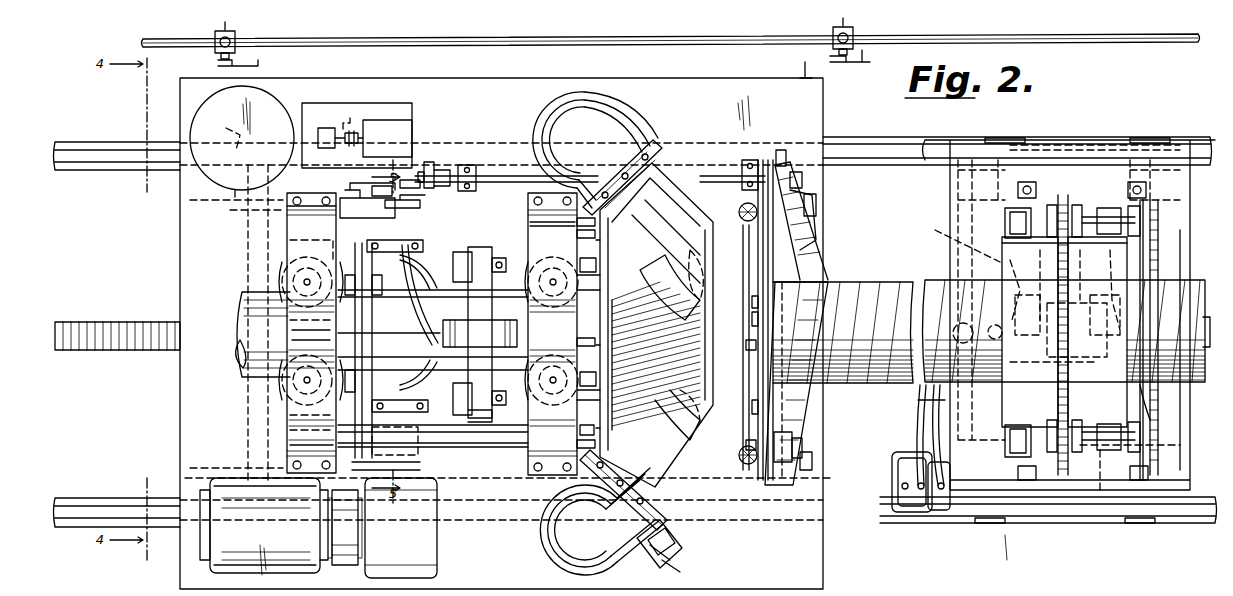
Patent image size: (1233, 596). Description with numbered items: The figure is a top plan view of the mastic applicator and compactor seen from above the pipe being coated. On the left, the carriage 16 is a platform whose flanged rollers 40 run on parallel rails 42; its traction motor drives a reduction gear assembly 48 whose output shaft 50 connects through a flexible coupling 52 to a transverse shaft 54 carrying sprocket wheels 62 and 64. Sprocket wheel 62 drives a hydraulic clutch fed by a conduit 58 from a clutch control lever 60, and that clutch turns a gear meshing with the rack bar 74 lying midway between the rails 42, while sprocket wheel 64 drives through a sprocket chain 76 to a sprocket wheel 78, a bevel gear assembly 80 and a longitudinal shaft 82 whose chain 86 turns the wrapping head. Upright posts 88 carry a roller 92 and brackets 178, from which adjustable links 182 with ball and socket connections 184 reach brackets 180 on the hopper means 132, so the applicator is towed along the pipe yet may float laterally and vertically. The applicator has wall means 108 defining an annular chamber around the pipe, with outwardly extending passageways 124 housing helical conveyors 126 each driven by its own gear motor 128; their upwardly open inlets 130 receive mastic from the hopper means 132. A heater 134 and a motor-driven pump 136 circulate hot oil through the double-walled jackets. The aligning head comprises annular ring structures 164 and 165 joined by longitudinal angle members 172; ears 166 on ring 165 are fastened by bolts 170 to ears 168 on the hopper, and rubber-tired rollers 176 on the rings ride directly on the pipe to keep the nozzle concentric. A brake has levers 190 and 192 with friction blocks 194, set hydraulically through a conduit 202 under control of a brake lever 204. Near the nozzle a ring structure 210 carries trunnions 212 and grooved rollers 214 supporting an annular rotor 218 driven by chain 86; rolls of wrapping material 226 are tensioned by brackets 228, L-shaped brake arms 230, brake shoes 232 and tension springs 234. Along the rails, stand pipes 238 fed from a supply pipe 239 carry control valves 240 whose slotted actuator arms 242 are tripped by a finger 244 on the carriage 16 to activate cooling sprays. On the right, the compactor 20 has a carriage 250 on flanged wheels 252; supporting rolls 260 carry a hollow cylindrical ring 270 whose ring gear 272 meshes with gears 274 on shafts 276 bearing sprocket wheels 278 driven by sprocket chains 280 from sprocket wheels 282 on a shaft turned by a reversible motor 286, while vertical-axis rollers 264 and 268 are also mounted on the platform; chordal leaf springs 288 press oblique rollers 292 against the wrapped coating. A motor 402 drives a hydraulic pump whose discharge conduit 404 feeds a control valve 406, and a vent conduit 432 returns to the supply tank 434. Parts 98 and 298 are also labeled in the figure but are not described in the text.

The carriage 16 is at (476, 80).
The compactor 20 is at (927, 256).
The flanged rollers 40 is at (246, 148).
The parallel rails 42 is at (100, 168).
The reduction gear assembly 48 is at (437, 570).
The output shaft 50 is at (372, 505).
The flexible coupling 52 is at (428, 442).
The shaft 54 is at (430, 352).
The conduit 58 is at (420, 260).
The clutch control lever 60 is at (680, 546).
The sprocket wheel 62 is at (365, 218).
The sprocket wheel 64 is at (380, 218).
The rack bar 74 is at (145, 322).
The sprocket chain 76 is at (425, 205).
The sprocket wheel 78 is at (430, 190).
The bevel gear assembly 80 is at (428, 160).
The shaft 82 is at (497, 176).
The sprocket chain 86 is at (785, 285).
The upright posts 88 is at (452, 300).
The roller 92 is at (502, 320).
The vertical bar 98 is at (740, 205).
The wall means 108 is at (739, 213).
The passageways 124 is at (660, 255).
The helical conveyors 126 is at (700, 252).
The gear motor 128 is at (598, 128).
The inlets 130 is at (696, 248).
The hopper means 132 is at (716, 292).
The heater 134 is at (212, 98).
The motor-driven pump 136 is at (324, 128).
The annular ring structure 164 is at (304, 200).
The annular ring structure 165 is at (530, 200).
The ears 166 is at (577, 222).
The ears 168 is at (580, 244).
The pins or bolts 170 is at (580, 428).
The angle members 172 is at (530, 224).
The rubber-tired rollers 176 is at (282, 278).
The bracket 178 is at (460, 255).
The brackets 180 is at (596, 264).
The adjustable links 182 is at (497, 252).
The ball and socket connections 184 is at (478, 250).
The brake lever 190 is at (338, 440).
The brake lever 192 is at (332, 243).
The friction block 194 is at (331, 350).
The conduit 202 is at (440, 473).
The brake lever 204 is at (678, 568).
The ring structure 210 is at (743, 270).
The trunnions 212 is at (746, 345).
The grooved rollers 214 is at (752, 319).
The annular rotor 218 is at (752, 302).
The roll of material 226 is at (808, 228).
The brackets 228 is at (802, 448).
The brake arm 230 is at (802, 182).
The brake shoe 232 is at (790, 164).
The tension springs 234 is at (816, 204).
The stand pipe 238 is at (220, 31).
The supply pipe 239 is at (686, 37).
The control valve 240 is at (229, 30).
The slotted actuator arm 242 is at (258, 64).
The pin or finger 244 is at (805, 66).
The carriage 250 is at (1035, 140).
The flanged wheels 252 is at (1000, 140).
The supporting rolls 260 is at (1008, 224).
The roller 264 is at (1107, 322).
The roller 268 is at (1010, 292).
The hollow cylindrical ring 270 is at (1160, 262).
The ring gear 272 is at (1073, 278).
The gears 274 is at (1060, 205).
The shafts 276 is at (1077, 205).
The sprocket wheel 278 is at (1140, 212).
The sprocket chains 280 is at (1160, 220).
The sprocket wheels 282 is at (1170, 285).
The motor 286 is at (1150, 382).
The leaf springs 288 is at (1035, 310).
The rollers 292 is at (948, 242).
The bolt 298 is at (1128, 190).
The motor 402 is at (938, 510).
The discharge conduit 404 is at (918, 440).
The control valve 406 is at (934, 392).
The vent conduit 432 is at (918, 405).
The supply tank 434 is at (900, 512).